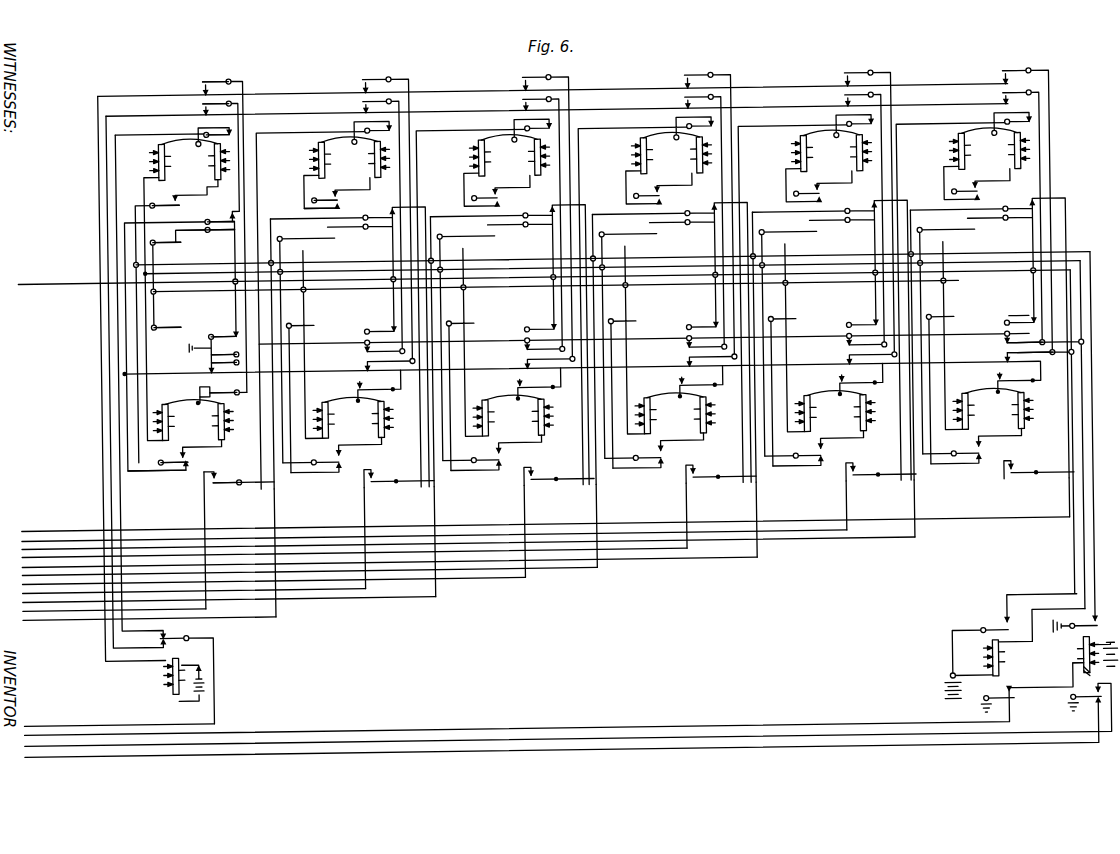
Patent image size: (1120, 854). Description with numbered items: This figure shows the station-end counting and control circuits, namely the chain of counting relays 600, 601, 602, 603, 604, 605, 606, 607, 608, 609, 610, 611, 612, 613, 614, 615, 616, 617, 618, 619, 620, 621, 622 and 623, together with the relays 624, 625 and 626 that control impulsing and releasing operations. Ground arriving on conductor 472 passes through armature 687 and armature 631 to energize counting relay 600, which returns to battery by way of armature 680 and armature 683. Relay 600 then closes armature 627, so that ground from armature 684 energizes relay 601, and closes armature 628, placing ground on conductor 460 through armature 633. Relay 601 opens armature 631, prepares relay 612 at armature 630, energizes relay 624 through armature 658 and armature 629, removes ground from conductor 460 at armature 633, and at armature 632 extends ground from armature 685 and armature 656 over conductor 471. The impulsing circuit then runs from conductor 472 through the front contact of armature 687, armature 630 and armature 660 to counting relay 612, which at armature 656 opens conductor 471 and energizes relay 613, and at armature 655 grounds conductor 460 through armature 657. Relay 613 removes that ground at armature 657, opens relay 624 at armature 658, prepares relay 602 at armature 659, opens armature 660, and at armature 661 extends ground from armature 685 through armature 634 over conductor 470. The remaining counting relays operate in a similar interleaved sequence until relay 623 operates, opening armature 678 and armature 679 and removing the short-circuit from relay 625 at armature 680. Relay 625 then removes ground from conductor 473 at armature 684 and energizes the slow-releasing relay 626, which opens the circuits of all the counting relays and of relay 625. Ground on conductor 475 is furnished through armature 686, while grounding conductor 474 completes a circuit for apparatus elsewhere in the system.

The conductor 460 is at (46, 274).
The conductor 470 is at (75, 640).
The conductor 471 is at (275, 621).
The conductor 472 is at (38, 716).
The conductor 473 is at (98, 725).
The conductor 474 is at (55, 746).
The conductor 475 is at (143, 749).
The counting relay 600 is at (160, 160).
The counting relay 601 is at (218, 158).
The counting relay 602 is at (320, 160).
The counting relay 603 is at (378, 158).
The counting relay 604 is at (480, 160).
The counting relay 605 is at (538, 158).
The counting relay 606 is at (642, 160).
The counting relay 607 is at (700, 158).
The counting relay 608 is at (802, 160).
The counting relay 609 is at (860, 158).
The counting relay 610 is at (960, 160).
The counting relay 611 is at (1018, 158).
The counting relay 612 is at (174, 412).
The counting relay 613 is at (232, 412).
The counting relay 614 is at (334, 412).
The counting relay 615 is at (392, 412).
The counting relay 616 is at (494, 412).
The counting relay 617 is at (548, 432).
The counting relay 618 is at (650, 428).
The counting relay 619 is at (708, 430).
The counting relay 620 is at (813, 415).
The counting relay 621 is at (874, 430).
The counting relay 622 is at (971, 415).
The counting relay 623 is at (1030, 432).
The relay 624 is at (200, 659).
The relay 625 is at (985, 655).
The slow-releasing relay 626 is at (1079, 658).
The armature 627 is at (183, 207).
The armature 628 is at (180, 245).
The armature 629 is at (228, 68).
The armature 630 is at (205, 99).
The armature 631 is at (205, 122).
The armature 632 is at (232, 219).
The armature 633 is at (230, 240).
The armature 634 is at (312, 197).
The armature 655 is at (178, 316).
The armature 656 is at (178, 466).
The armature 657 is at (236, 332).
The armature 658 is at (194, 349).
The armature 659 is at (206, 359).
The armature 660 is at (198, 388).
The armature 661 is at (235, 481).
The armature 678 is at (1014, 320).
The armature 679 is at (1006, 348).
The armature 680 is at (1006, 359).
The armature 683 is at (998, 628).
The armature 684 is at (1090, 627).
The armature 685 is at (965, 712).
The armature 686 is at (1068, 712).
The armature 687 is at (188, 631).